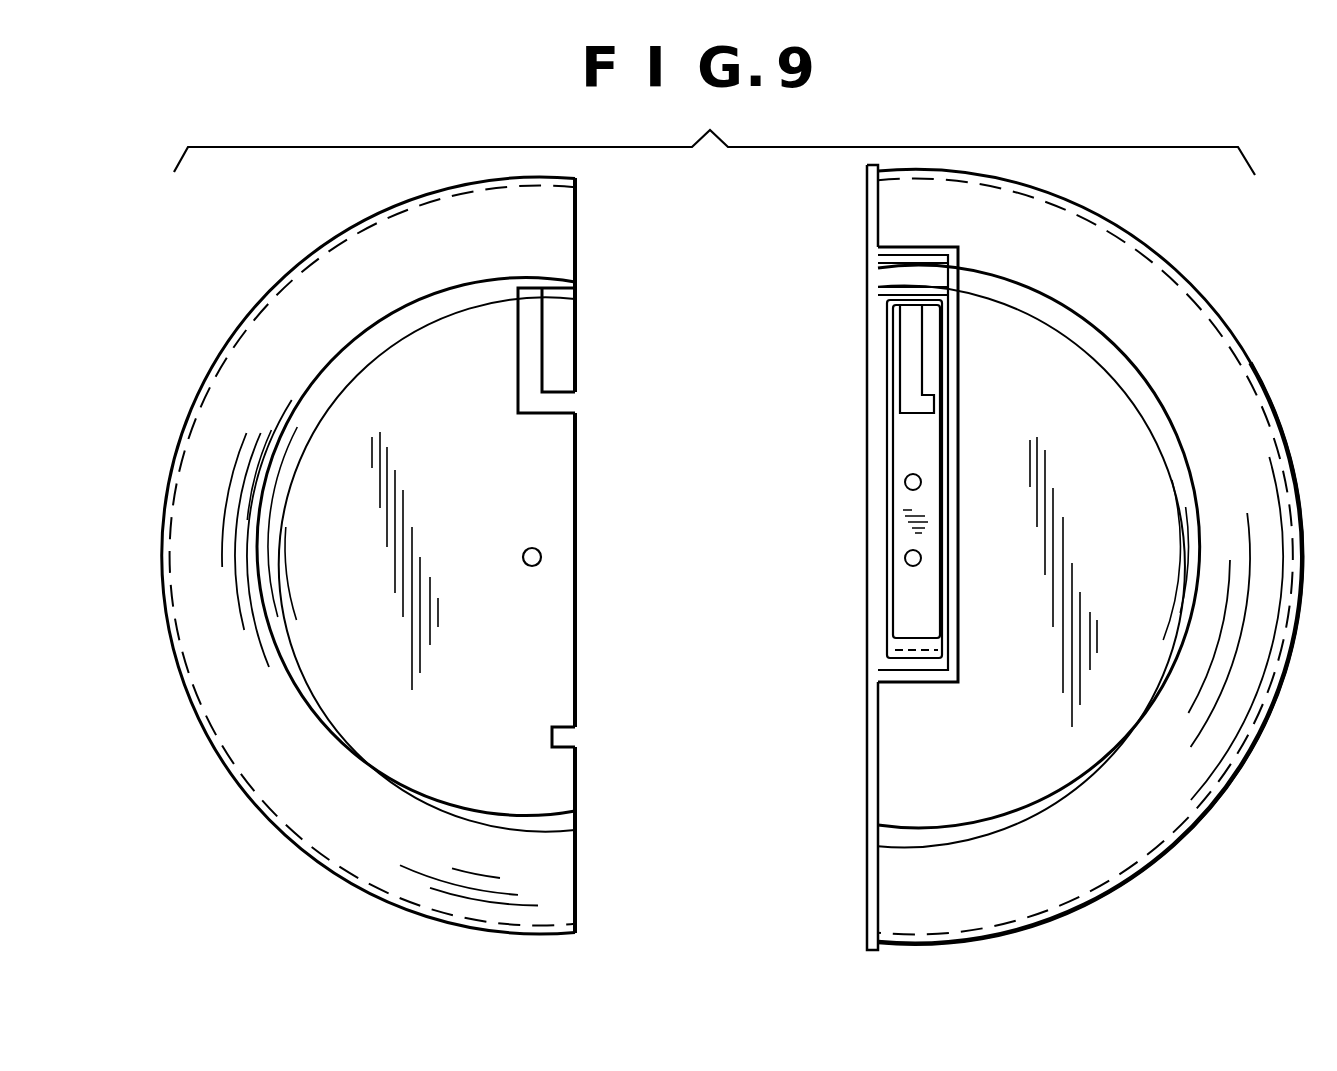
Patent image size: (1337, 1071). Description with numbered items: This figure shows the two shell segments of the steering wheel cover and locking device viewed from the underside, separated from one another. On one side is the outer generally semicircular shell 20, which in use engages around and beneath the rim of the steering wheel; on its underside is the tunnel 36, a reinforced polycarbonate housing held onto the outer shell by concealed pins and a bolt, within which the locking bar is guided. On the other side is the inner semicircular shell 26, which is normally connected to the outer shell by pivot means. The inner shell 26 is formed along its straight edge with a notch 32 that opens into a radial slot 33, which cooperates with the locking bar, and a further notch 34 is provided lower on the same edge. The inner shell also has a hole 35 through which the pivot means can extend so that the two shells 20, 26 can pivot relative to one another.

The outer semicircular shell 20 is at (1236, 333).
The inner semicircular shell 26 is at (178, 662).
The notch 32 is at (562, 413).
The radial slot 33 is at (528, 342).
The further notch 34 is at (566, 737).
The hole 35 is at (543, 560).
The tunnel 36 is at (960, 417).